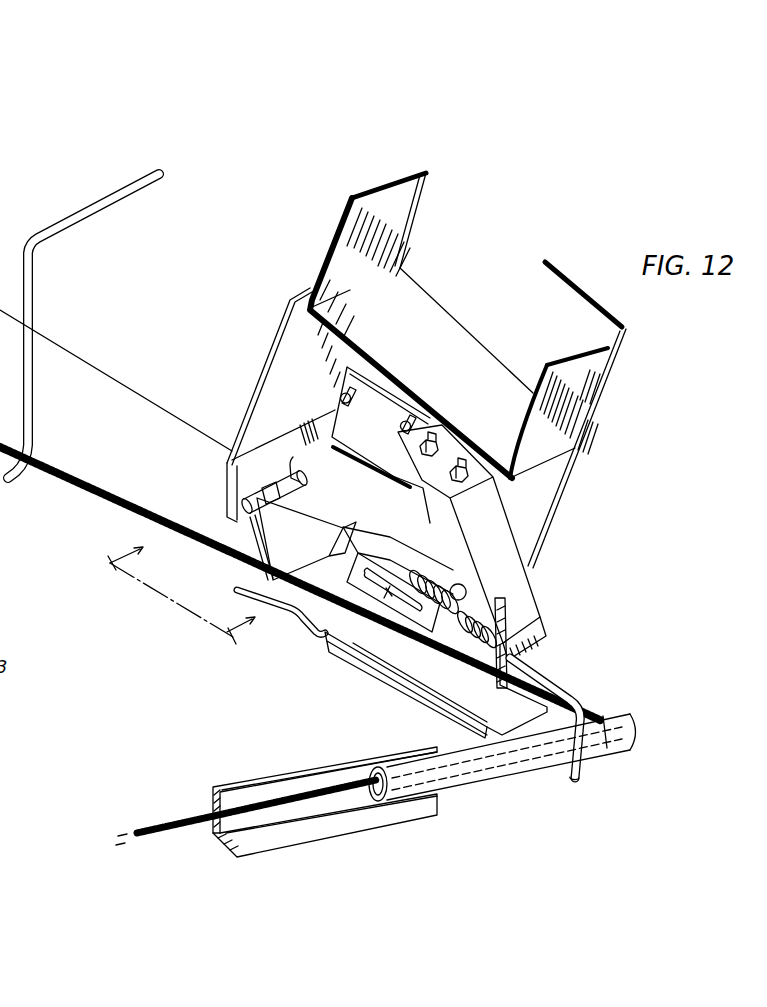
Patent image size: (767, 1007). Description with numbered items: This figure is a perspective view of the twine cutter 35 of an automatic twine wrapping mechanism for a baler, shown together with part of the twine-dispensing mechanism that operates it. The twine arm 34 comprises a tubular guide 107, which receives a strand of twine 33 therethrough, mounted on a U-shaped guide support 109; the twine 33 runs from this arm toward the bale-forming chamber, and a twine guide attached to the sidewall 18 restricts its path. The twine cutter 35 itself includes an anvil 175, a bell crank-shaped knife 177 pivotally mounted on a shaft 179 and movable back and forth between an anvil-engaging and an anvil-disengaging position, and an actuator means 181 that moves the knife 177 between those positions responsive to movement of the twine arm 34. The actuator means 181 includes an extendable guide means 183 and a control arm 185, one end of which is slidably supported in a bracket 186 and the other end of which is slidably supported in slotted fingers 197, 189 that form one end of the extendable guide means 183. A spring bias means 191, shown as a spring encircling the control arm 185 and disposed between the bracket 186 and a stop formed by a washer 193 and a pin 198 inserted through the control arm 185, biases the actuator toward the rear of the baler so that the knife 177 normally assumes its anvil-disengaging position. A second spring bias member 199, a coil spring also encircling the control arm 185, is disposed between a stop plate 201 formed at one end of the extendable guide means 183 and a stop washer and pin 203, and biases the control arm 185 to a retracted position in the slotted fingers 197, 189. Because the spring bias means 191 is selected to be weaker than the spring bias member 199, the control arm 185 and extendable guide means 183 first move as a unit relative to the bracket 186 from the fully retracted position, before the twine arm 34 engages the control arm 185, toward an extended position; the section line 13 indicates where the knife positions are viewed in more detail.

The section line 13- 13 is at (167, 602).
The sidewall 18 is at (577, 460).
The twine 33 is at (150, 512).
The twine arm 34 is at (300, 767).
The twine cutter 35 is at (565, 553).
The tubular guide 107 is at (537, 770).
The U-shaped guide support 109 is at (357, 818).
The anvil 175 is at (303, 622).
The knife 177 is at (246, 544).
The shaft 179 is at (245, 510).
The actuator means 181 is at (367, 537).
The extendable guide means 183 is at (315, 520).
The control arm 185 is at (545, 673).
The bracket 186 is at (527, 602).
The slotted finger 189 is at (413, 587).
The spring bias means 191 is at (487, 617).
The washer 193 is at (449, 652).
The slotted finger 197 is at (428, 620).
The pin 198 is at (490, 600).
The spring bias member 199 is at (460, 597).
The stop plate 201 is at (446, 657).
The stop washer and pin 203 is at (410, 556).